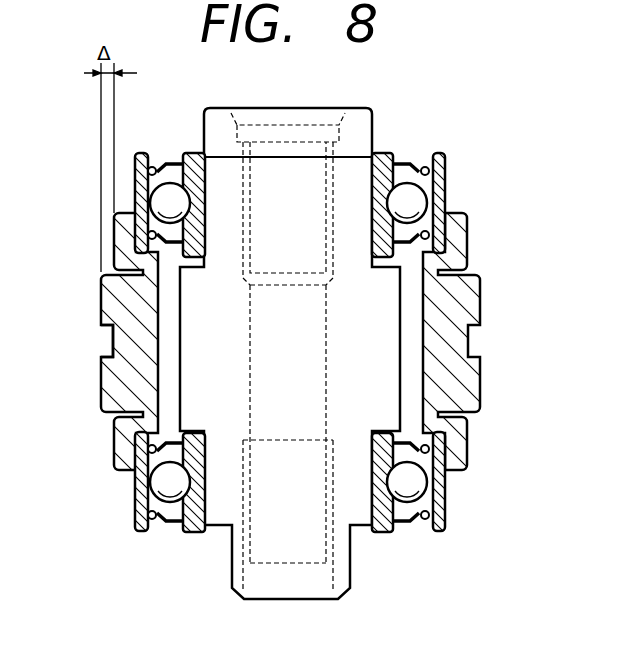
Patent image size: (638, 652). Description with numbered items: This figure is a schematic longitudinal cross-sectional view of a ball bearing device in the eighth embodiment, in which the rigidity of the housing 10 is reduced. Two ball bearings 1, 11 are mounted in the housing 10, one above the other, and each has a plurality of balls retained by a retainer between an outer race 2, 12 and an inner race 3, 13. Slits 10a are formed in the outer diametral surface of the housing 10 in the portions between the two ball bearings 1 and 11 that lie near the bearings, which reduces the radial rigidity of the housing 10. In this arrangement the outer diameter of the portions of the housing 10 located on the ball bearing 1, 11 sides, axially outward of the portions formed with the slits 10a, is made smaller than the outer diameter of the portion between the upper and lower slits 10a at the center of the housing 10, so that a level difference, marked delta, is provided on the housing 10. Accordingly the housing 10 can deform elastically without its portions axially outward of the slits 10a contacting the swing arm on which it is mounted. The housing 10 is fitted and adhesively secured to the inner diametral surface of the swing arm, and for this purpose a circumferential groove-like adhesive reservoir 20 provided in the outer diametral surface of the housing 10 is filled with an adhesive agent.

The ball bearing 1 is at (317, 161).
The outer race 2 is at (437, 180).
The inner race 3 is at (380, 160).
The housing 10 is at (304, 341).
The slit 10a is at (480, 412).
The ball bearing 11 is at (329, 527).
The outer race 12 is at (443, 497).
The inner race 13 is at (386, 514).
The adhesive reservoir 20 is at (100, 342).